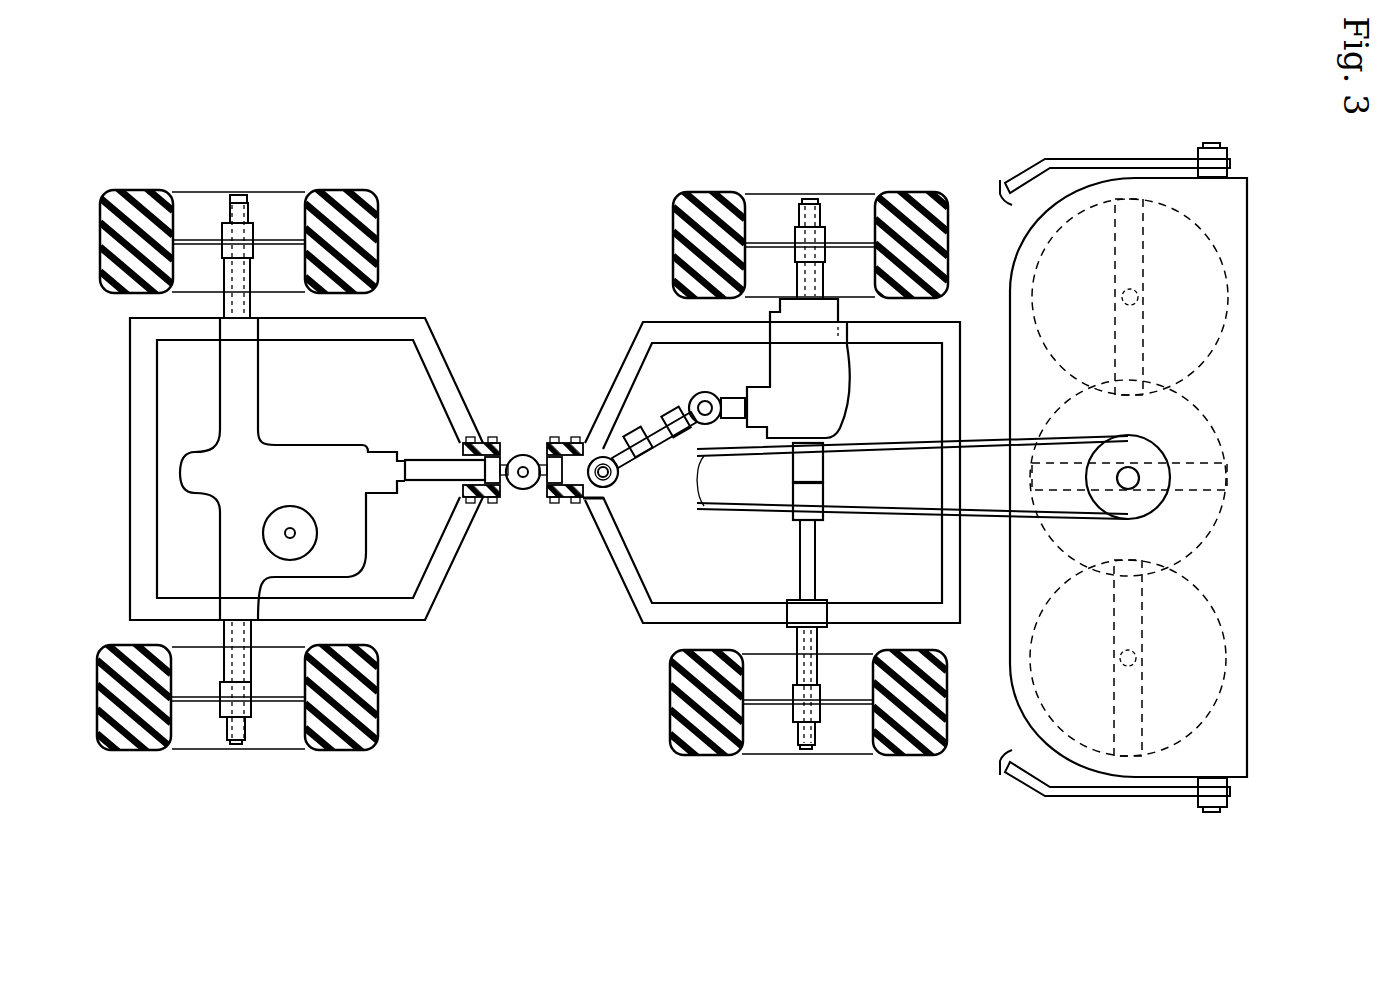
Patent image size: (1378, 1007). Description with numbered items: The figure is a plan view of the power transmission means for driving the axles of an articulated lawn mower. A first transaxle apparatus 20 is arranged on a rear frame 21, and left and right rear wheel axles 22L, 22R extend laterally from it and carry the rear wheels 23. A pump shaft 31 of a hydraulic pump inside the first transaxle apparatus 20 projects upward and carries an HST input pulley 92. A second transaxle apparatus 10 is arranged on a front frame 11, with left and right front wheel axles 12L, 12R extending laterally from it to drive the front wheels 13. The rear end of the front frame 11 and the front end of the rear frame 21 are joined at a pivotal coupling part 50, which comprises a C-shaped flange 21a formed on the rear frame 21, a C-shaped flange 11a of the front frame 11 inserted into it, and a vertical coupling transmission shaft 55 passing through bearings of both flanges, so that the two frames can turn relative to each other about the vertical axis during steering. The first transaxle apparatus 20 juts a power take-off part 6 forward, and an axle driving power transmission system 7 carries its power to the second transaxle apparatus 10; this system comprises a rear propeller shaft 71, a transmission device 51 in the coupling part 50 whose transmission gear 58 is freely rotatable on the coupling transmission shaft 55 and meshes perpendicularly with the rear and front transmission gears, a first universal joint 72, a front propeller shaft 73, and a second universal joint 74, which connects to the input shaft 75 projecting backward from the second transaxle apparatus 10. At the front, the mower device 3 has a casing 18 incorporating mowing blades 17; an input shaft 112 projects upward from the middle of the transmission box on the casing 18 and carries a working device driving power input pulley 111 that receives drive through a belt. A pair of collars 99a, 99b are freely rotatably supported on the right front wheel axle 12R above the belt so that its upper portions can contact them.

The mower device 3 is at (1097, 456).
The power take-off part 6 is at (292, 469).
The power transmission system 7 is at (672, 520).
The second transaxle apparatus 10 is at (850, 378).
The front frame 11 is at (622, 362).
The flange 11a is at (567, 430).
The left front wheel axle 12L is at (808, 197).
The right front wheel axle 12R is at (805, 753).
The front wheels 13 is at (670, 250).
The mowing blades 17 is at (1145, 262).
The casing 18 is at (1010, 680).
The first transaxle apparatus 20 is at (312, 428).
The rear frame 21 is at (449, 367).
The flange 21a is at (507, 440).
The left rear wheel axle 22L is at (238, 195).
The right rear wheel axle 22R is at (237, 748).
The rear wheels 23 is at (377, 242).
The pump shaft 31 is at (298, 527).
The pivotal coupling part 50 is at (533, 491).
The transmission device 51 is at (528, 458).
The coupling transmission shaft 55 is at (527, 478).
The transmission gear 58 is at (516, 488).
The rear propeller shaft 71 is at (435, 480).
The first universal joint 72 is at (618, 498).
The front propeller shaft 73 is at (660, 446).
The second universal joint 74 is at (678, 396).
The input shaft 75 is at (740, 388).
The HST input pulley 92 is at (286, 528).
The collar 99a is at (825, 518).
The collar 99b is at (825, 468).
The working device driving power input pulley 111 is at (1158, 445).
The input shaft 112 is at (1130, 487).